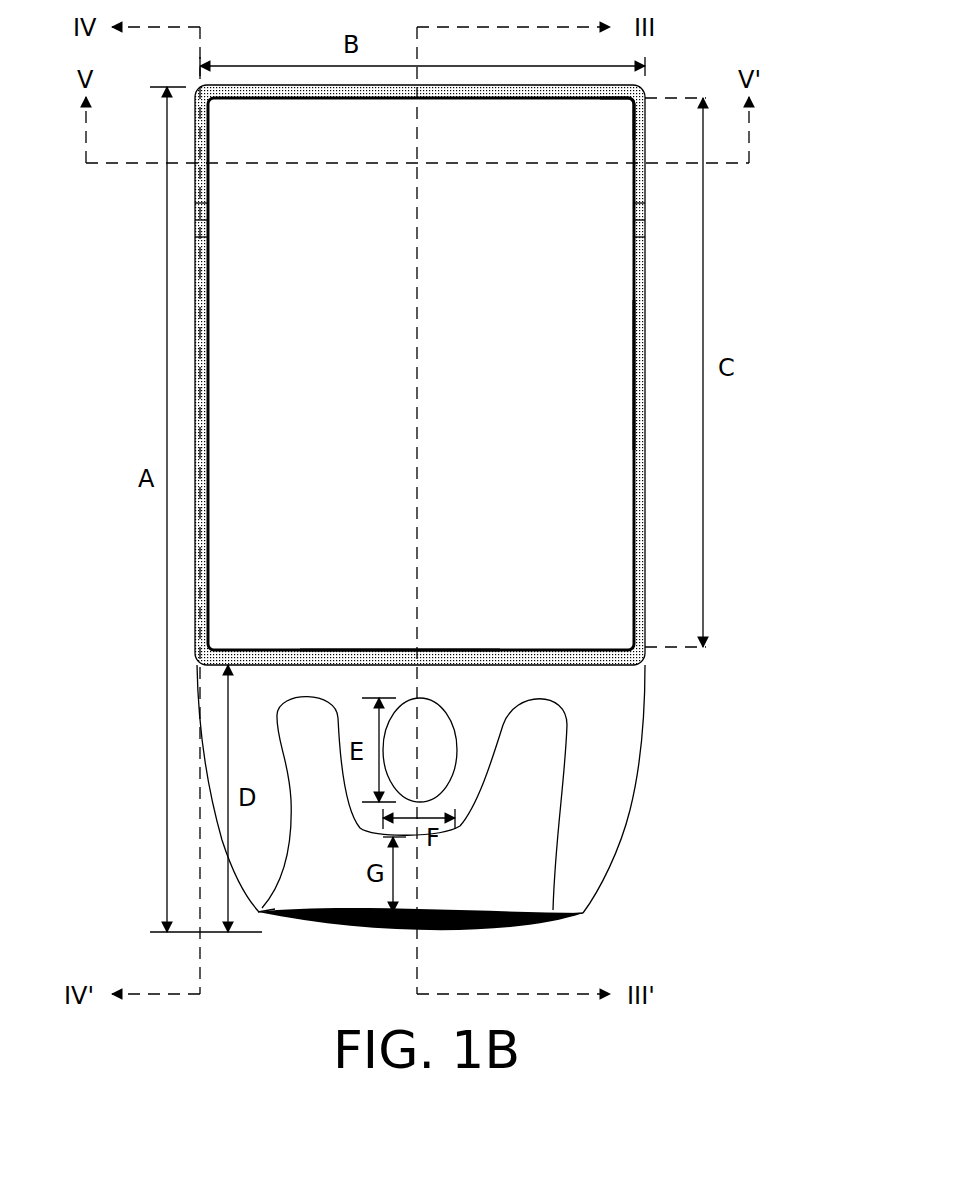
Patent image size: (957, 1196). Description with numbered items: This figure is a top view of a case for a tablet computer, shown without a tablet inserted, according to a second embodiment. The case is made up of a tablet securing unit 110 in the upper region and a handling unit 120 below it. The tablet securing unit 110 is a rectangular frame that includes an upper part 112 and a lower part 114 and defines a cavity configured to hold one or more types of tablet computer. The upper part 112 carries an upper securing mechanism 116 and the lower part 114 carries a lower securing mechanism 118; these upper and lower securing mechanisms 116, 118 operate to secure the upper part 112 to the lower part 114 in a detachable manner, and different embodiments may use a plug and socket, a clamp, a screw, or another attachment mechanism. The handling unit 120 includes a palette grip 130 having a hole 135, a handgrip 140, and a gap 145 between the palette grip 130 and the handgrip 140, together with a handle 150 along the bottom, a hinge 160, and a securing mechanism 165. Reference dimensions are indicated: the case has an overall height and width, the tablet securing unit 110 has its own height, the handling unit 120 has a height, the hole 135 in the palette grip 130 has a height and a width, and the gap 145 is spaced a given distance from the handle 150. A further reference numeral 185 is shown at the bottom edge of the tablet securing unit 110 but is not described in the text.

The tablet securing unit 110 is at (634, 477).
The upper part 112 is at (633, 130).
The lower part 114 is at (634, 371).
The upper securing mechanism 116 is at (210, 212).
The lower securing mechanism 118 is at (210, 230).
The handling unit 120 is at (645, 692).
The palette grip 130 is at (473, 822).
The hole 135 is at (437, 727).
The handgrip 140 is at (627, 823).
The gap 145 is at (547, 714).
The handle 150 is at (328, 912).
The hinge 160 is at (580, 915).
The securing mechanism 165 is at (262, 908).
The frame bottom seam 185 is at (389, 649).